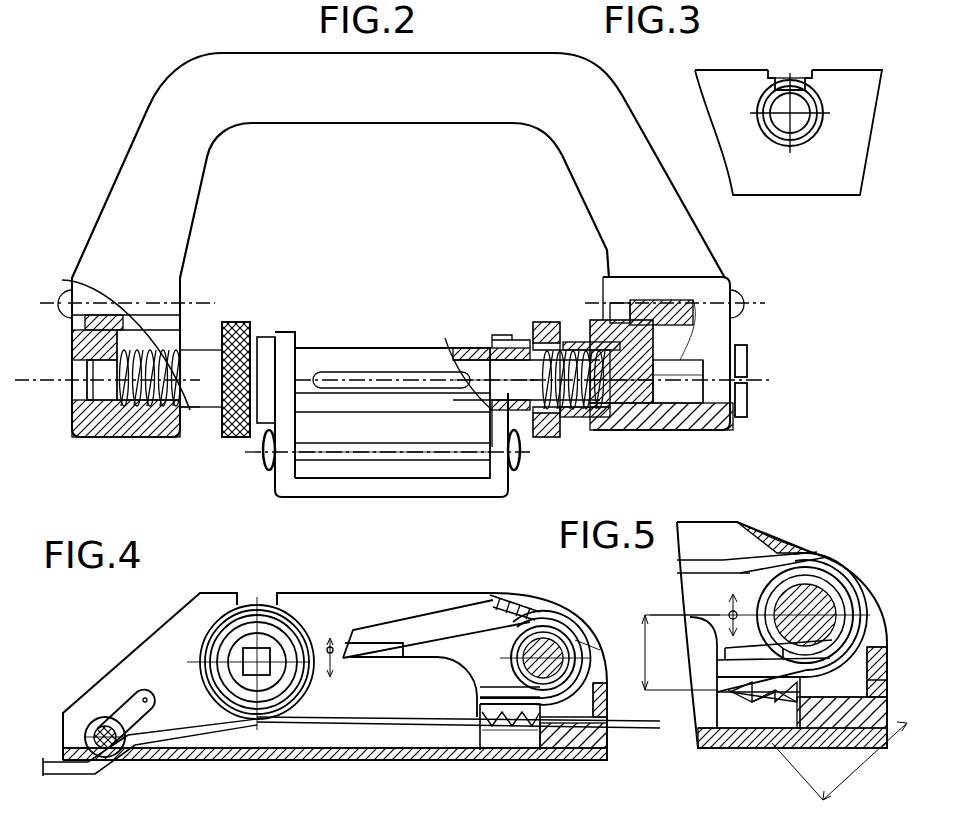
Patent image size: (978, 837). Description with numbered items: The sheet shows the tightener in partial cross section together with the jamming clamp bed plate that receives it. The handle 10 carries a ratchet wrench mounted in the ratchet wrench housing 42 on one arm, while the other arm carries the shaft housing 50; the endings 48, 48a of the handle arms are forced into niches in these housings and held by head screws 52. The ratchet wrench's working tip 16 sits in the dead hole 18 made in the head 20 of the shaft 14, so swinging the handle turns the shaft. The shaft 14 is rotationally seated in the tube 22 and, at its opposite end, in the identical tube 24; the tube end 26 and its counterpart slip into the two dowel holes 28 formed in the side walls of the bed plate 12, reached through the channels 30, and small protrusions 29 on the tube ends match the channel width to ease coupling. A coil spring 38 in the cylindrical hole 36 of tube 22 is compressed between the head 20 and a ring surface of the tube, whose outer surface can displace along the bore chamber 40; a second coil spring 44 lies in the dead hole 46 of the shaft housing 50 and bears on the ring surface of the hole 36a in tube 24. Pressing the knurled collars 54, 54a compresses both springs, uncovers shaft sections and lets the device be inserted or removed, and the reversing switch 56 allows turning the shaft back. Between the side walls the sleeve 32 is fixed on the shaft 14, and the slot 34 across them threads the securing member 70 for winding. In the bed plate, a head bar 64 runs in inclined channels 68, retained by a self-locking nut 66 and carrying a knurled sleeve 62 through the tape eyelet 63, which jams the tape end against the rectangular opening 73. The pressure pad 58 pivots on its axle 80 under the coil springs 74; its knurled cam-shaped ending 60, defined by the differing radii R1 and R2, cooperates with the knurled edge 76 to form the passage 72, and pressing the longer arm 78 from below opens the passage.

In FIG. 2, the handle 10 is at (150, 172).
In FIG. 2, the tightener bed plate 12 is at (378, 485).
In FIG. 3, the tightener bed plate 12 is at (818, 165).
In FIG. 4, the tightener bed plate 12 is at (143, 758).
In FIG. 5, the tightener bed plate 12 is at (782, 635).
In FIG. 2, the shaft 14 is at (98, 388).
In FIG. 2, the working tip 16 is at (712, 420).
In FIG. 2, the dead hole 18 is at (688, 392).
In FIG. 4, the dead hole 18 is at (267, 677).
In FIG. 2, the head 20 is at (617, 398).
In FIG. 4, the head 20 is at (277, 667).
In FIG. 2, the tube 22 is at (570, 405).
In FIG. 2, the tube 24 is at (210, 403).
In FIG. 2, the tube end 26 is at (523, 420).
In FIG. 3, the tube end 26 is at (765, 93).
In FIG. 2, the dowel hole 28 is at (462, 350).
In FIG. 3, the dowel hole 28 is at (782, 147).
In FIG. 2, the protrusion 29 is at (505, 348).
In FIG. 3, the protrusion 29 is at (780, 80).
In FIG. 2, the channel 30 is at (505, 335).
In FIG. 3, the channel 30 is at (795, 75).
In FIG. 4, the channel 30 is at (265, 602).
In FIG. 2, the sleeve 32 is at (405, 355).
In FIG. 2, the slot 34 is at (350, 380).
In FIG. 2, the cylindrical hole 36 is at (590, 415).
In FIG. 2, the hole 36a is at (187, 405).
In FIG. 2, the coil spring 38 is at (613, 300).
In FIG. 2, the bore chamber 40 is at (643, 385).
In FIG. 2, the ratchet wrench housing 42 is at (712, 423).
In FIG. 2, the coil spring 44 is at (148, 407).
In FIG. 2, the dead hole 46 is at (120, 403).
In FIG. 2, the handle arm ending 48 is at (692, 322).
In FIG. 2, the handle arm ending 48a is at (122, 317).
In FIG. 2, the shaft housing 50 is at (152, 412).
In FIG. 2, the head screw 52 is at (65, 282).
In FIG. 2, the knurled collar 54 is at (545, 335).
In FIG. 2, the knurled collar 54a is at (235, 340).
In FIG. 2, the reversing switch 56 is at (745, 400).
In FIG. 4, the pressure pad 58 is at (566, 630).
In FIG. 5, the pressure pad 58 is at (792, 622).
In FIG. 4, the cam-shaped ending 60 is at (525, 717).
In FIG. 2, the knurled sleeve 62 is at (423, 455).
In FIG. 4, the eyelet 63 is at (84, 734).
In FIG. 2, the head bar 64 is at (514, 470).
In FIG. 4, the head bar 64 is at (100, 718).
In FIG. 2, the self-locking nut 66 is at (270, 470).
In FIG. 4, the channel 68 is at (140, 693).
In FIG. 4, the securing member 70 is at (55, 760).
In FIG. 5, the passage 72 is at (730, 695).
In FIG. 4, the rectangular opening 73 is at (105, 750).
In FIG. 4, the coil spring 74 is at (500, 605).
In FIG. 4, the knurled edge 76 is at (480, 747).
In FIG. 4, the longer arm 78 is at (395, 632).
In FIG. 5, the longer arm 78 is at (760, 624).
In FIG. 4, the axle 80 is at (585, 650).
In FIG. 5, the radius R1 is at (681, 652).
In FIG. 5, the radius R2 is at (839, 761).